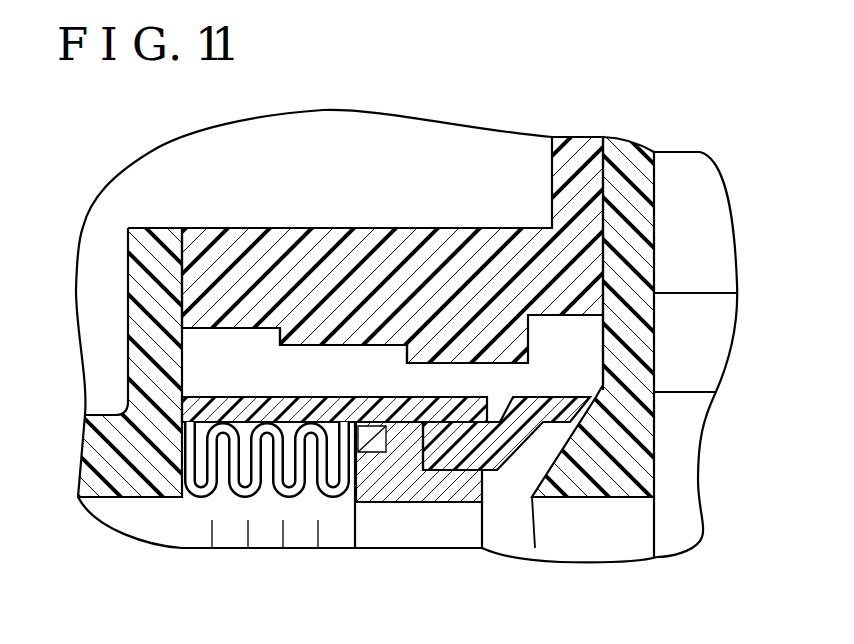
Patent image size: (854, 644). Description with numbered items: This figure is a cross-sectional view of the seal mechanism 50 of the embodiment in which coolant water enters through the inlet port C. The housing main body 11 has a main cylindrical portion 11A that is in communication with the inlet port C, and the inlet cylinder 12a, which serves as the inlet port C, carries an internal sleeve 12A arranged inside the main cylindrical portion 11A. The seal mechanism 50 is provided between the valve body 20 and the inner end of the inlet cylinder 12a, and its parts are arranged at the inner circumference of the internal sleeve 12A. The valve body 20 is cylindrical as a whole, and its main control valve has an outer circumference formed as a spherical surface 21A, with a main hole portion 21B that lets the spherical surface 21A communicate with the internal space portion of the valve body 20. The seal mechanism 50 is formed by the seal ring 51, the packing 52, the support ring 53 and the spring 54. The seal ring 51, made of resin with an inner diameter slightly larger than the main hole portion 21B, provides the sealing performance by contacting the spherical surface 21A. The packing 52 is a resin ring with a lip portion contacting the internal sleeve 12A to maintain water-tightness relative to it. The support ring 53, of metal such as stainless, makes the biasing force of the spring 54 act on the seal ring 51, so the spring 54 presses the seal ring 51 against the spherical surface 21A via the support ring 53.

The housing main body 11 is at (552, 168).
The main cylindrical portion 11A is at (272, 228).
The inlet cylinder 12a is at (128, 283).
The internal sleeve 12A is at (295, 397).
The valve body 20 is at (657, 213).
The spherical surface 21A is at (600, 386).
The main hole portion 21B is at (637, 497).
The seal mechanism 50 is at (518, 503).
The seal ring 51 is at (540, 397).
The packing 52 is at (382, 397).
The support ring 53 is at (395, 505).
The spring 54 is at (180, 518).
The inlet port C is at (130, 515).